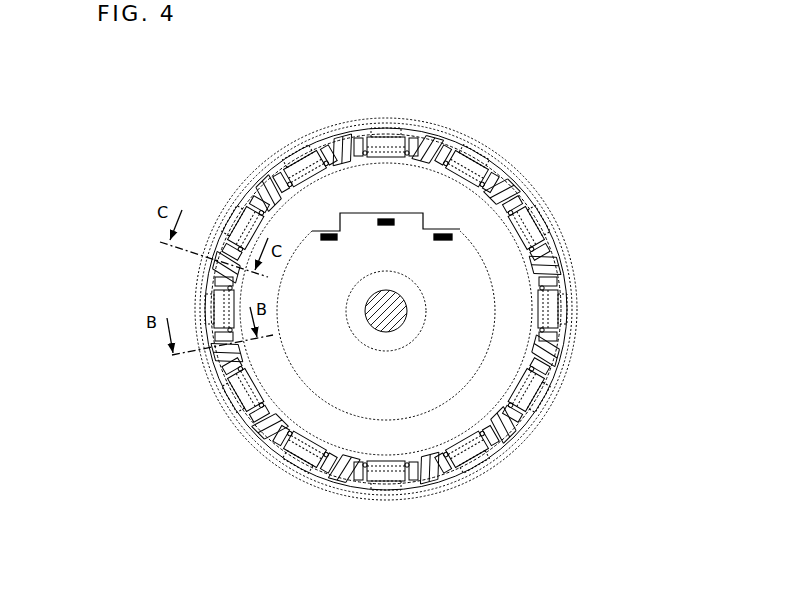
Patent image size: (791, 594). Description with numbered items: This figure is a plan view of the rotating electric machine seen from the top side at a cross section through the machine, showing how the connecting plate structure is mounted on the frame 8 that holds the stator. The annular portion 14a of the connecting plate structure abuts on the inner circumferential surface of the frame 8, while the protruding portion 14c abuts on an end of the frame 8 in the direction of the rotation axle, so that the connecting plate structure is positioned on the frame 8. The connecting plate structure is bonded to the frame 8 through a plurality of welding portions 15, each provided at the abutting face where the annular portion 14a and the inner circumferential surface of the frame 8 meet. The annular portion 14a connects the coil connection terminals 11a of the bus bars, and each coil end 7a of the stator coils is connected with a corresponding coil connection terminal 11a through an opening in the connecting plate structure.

The coil end 7a is at (386, 397).
The frame 8 is at (538, 433).
The coil connection terminal 11a is at (386, 358).
The annular portion 14a is at (498, 175).
The protruding portion 14c is at (447, 130).
The welding portion 15 is at (347, 133).